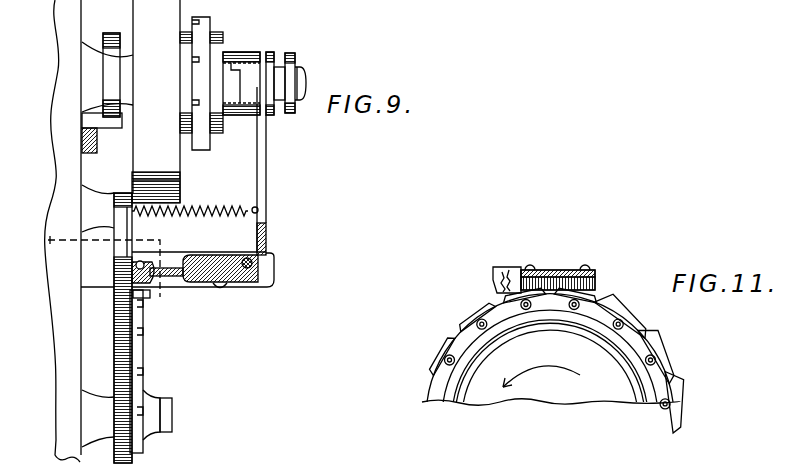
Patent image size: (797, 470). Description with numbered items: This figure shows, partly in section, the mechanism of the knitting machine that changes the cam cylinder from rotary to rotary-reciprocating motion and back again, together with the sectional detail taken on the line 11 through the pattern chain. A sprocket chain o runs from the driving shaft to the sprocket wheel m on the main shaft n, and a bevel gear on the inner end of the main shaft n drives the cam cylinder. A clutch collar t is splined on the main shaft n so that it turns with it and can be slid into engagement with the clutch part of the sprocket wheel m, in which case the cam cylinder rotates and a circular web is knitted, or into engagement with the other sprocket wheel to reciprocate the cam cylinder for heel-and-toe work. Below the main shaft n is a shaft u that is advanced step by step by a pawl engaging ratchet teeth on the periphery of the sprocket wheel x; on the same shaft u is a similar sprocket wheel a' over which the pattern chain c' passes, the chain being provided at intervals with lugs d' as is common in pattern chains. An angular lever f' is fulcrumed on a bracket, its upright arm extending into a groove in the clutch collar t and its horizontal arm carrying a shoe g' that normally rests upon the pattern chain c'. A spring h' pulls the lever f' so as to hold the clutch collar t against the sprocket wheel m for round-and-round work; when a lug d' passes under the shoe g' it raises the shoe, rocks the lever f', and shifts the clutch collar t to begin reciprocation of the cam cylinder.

In FIG. 9, the sprocket wheel m is at (212, 30).
In FIG. 9, the main shaft n is at (300, 76).
In FIG. 9, the clutch collar t is at (241, 83).
In FIG. 9, the sprocket chain o is at (190, 148).
In FIG. 9, the angular lever f' is at (272, 171).
In FIG. 9, the spring h' is at (195, 200).
In FIG. 9, the sprocket wheel a' is at (199, 256).
In FIG. 11, the sprocket wheel a' is at (557, 353).
In FIG. 9, the shoe g' is at (203, 280).
In FIG. 11, the shoe g' is at (558, 269).
In FIG. 9, the section line 11 is at (98, 272).
In FIG. 9, the pattern chain c' is at (143, 328).
In FIG. 11, the pattern chain c' is at (550, 346).
In FIG. 9, the shaft u is at (176, 410).
In FIG. 11, the lug d' is at (507, 269).
In FIG. 11, the sprocket wheel x is at (541, 363).